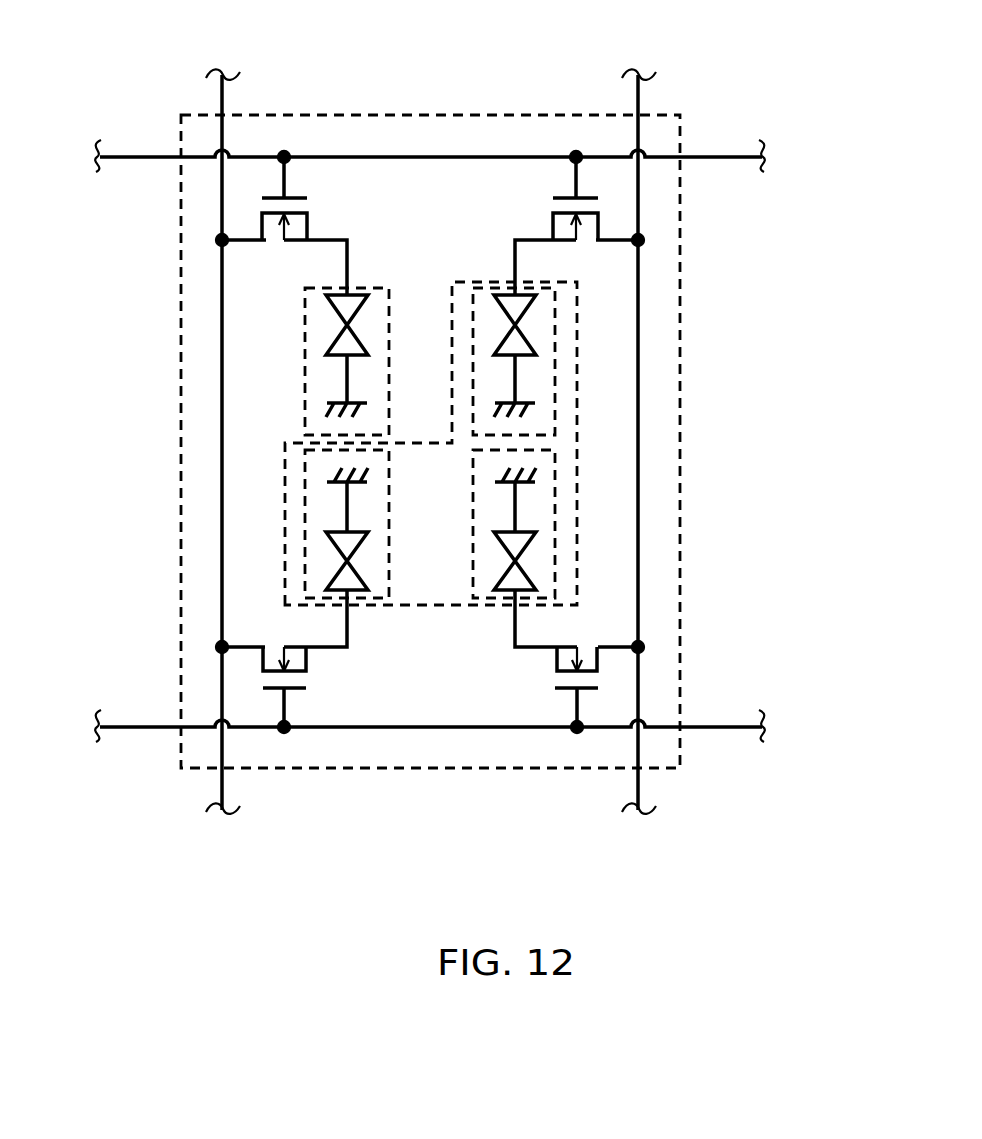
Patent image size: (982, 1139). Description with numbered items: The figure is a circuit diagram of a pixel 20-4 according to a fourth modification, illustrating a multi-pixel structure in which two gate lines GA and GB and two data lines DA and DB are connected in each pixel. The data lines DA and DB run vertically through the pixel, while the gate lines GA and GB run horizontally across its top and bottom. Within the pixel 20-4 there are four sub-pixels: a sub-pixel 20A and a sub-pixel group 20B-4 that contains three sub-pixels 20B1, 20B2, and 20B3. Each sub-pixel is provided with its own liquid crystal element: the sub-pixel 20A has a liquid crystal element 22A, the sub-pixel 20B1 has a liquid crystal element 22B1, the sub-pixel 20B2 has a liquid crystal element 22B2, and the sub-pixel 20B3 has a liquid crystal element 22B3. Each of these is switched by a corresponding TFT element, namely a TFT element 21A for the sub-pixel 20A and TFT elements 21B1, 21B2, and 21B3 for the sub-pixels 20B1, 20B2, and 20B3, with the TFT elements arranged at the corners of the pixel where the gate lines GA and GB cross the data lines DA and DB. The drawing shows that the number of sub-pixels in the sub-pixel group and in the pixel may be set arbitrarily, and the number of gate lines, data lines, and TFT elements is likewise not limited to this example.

The data line DA is at (222, 100).
The data line DB is at (638, 100).
The gate line GA is at (692, 155).
The gate line GB is at (732, 729).
The pixel 20-4 is at (428, 115).
The sub-pixel group 20B-4 is at (433, 612).
The sub-pixel 20A is at (307, 387).
The sub-pixel 20B1 is at (287, 523).
The sub-pixel 20B2 is at (557, 387).
The sub-pixel 20B3 is at (577, 523).
The TFT element 21A is at (226, 219).
The TFT element 21B1 is at (229, 678).
The TFT element 21B2 is at (632, 219).
The TFT element 21B3 is at (632, 676).
The liquid crystal element 22A is at (306, 339).
The liquid crystal element 22B1 is at (311, 564).
The liquid crystal element 22B2 is at (551, 338).
The liquid crystal element 22B3 is at (551, 562).